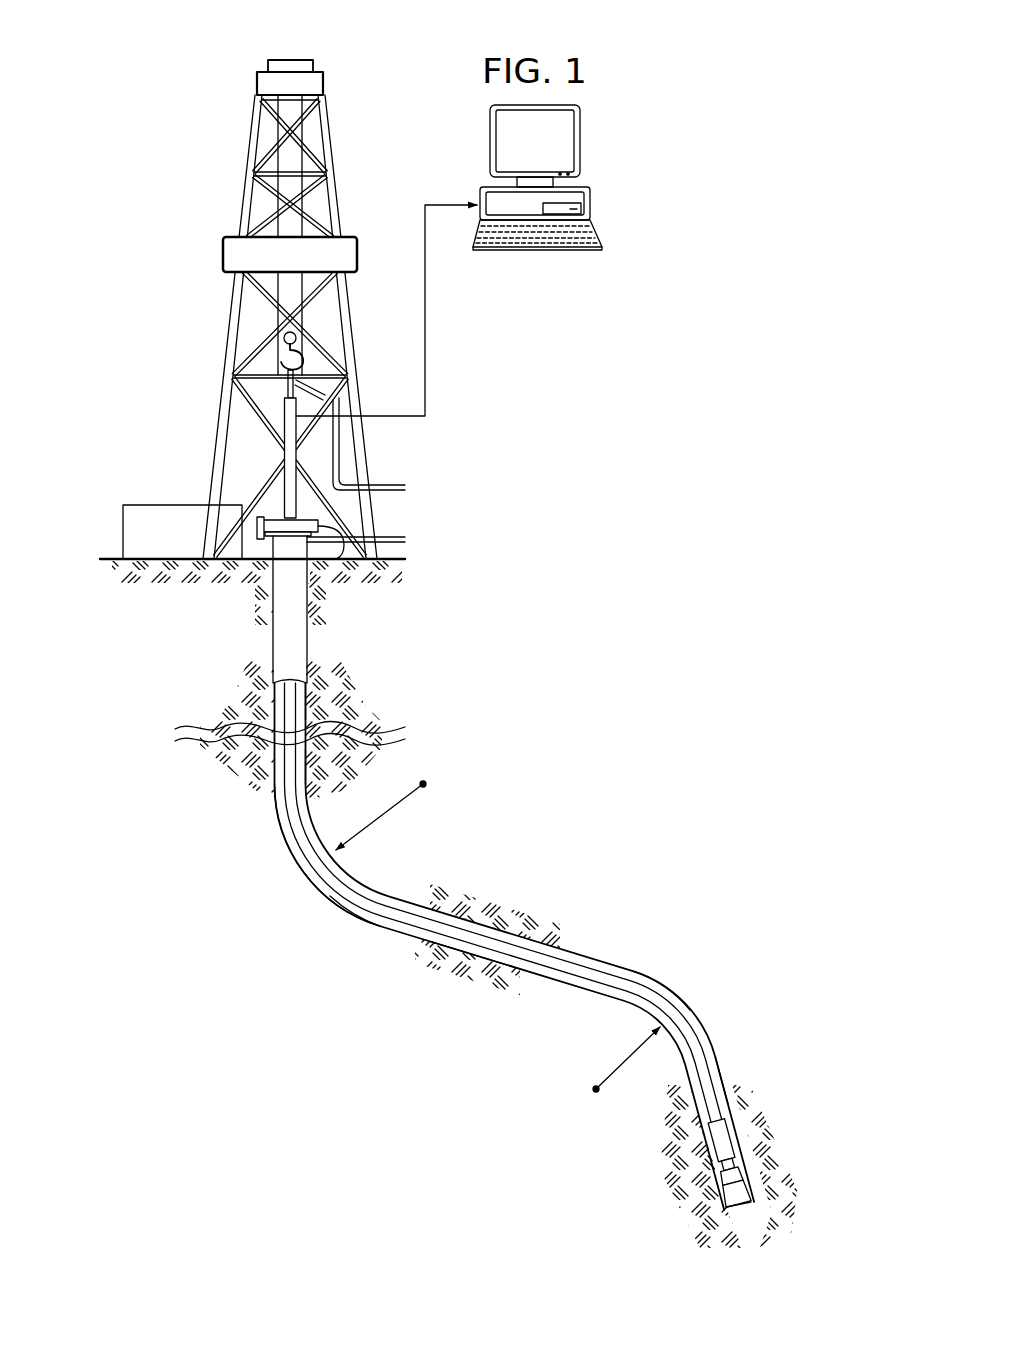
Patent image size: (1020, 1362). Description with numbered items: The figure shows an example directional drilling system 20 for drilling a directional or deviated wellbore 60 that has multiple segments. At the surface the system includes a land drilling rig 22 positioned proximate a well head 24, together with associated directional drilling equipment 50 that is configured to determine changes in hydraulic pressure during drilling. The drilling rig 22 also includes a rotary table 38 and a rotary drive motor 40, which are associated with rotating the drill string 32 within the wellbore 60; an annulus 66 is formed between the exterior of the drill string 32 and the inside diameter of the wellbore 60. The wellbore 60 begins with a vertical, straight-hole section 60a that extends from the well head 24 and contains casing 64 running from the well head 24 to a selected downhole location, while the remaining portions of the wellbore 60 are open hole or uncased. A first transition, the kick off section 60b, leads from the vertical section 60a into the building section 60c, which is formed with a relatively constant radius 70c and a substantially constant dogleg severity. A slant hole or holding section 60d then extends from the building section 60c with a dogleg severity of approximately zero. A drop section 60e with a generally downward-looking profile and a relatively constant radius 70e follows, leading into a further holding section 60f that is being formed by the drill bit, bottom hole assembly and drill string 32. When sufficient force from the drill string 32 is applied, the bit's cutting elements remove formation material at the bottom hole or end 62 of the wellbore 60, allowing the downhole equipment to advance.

The directional drilling system 20 is at (186, 58).
The land drilling rig 22 is at (242, 164).
The well head 24 is at (261, 553).
The drill string 32 is at (329, 896).
The rotary table 38 is at (328, 560).
The rotary drive motor 40 is at (123, 540).
The directional drilling equipment 50 is at (583, 143).
The wellbore 60 is at (457, 886).
The vertical section 60a is at (350, 690).
The kick off section 60b is at (312, 770).
The building section 60c is at (348, 914).
The slant hole section 60d is at (495, 962).
The drop section 60e is at (661, 984).
The holding section 60f is at (721, 1068).
The bottom hole 62 is at (741, 1214).
The casing 64 is at (273, 652).
The annulus 66 is at (281, 845).
The radius 70c is at (384, 812).
The radius 70e is at (628, 1063).